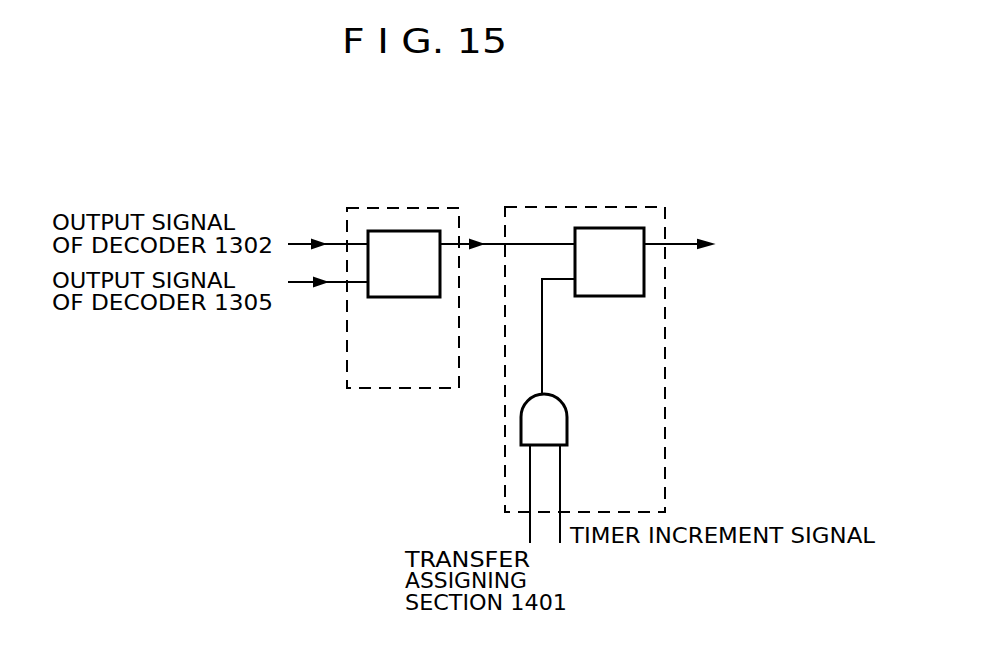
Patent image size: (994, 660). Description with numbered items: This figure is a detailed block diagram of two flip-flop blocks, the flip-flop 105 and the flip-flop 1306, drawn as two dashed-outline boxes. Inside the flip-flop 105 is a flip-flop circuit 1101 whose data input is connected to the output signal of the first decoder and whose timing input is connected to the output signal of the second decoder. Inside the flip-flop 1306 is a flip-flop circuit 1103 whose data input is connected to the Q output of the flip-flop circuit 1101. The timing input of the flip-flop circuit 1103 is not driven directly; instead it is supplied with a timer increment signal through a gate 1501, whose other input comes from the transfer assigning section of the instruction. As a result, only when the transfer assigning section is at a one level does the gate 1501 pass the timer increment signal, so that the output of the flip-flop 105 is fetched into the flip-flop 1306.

The flip-flop 105 is at (393, 208).
The flip-flop circuit 1101 is at (425, 231).
The flip-flop 1306 is at (577, 207).
The flip-flop circuit 1103 is at (625, 228).
The gate 1501 is at (567, 410).